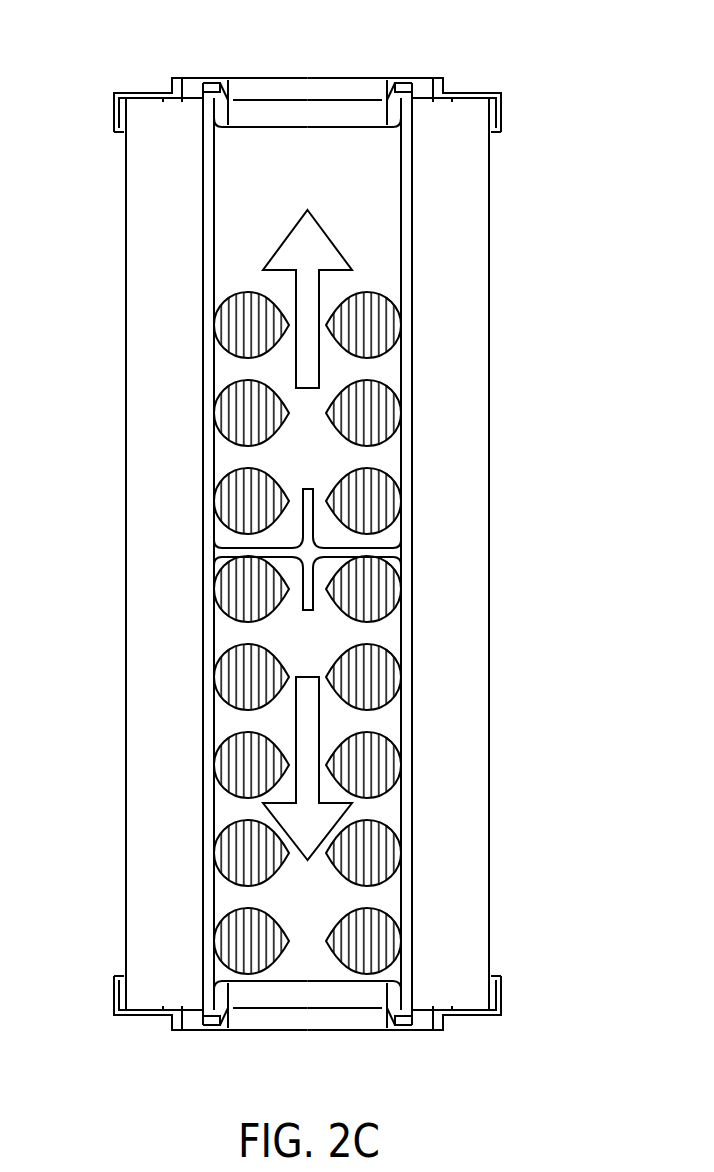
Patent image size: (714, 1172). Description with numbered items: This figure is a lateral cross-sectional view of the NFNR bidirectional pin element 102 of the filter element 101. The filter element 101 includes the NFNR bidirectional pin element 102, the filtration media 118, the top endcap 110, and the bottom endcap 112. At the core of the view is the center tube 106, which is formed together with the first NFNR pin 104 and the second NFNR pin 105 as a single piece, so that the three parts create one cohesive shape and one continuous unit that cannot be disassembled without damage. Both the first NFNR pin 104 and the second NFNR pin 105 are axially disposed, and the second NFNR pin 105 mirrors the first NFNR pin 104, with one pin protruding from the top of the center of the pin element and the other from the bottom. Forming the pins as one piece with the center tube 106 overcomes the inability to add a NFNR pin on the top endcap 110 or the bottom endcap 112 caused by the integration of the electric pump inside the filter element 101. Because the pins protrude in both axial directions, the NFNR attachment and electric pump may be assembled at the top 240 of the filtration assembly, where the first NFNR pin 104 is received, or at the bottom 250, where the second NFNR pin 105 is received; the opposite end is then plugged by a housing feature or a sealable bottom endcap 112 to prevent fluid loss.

The filter element 101 is at (133, 63).
The NFNR bidirectional pin element 102 is at (422, 551).
The first NFNR pin 104 is at (305, 497).
The second NFNR pin 105 is at (306, 589).
The center tube 106 is at (412, 651).
The top endcap 110 is at (497, 110).
The bottom endcap 112 is at (498, 998).
The filtration media 118 is at (160, 828).
The top 240 is at (307, 299).
The bottom 250 is at (307, 768).